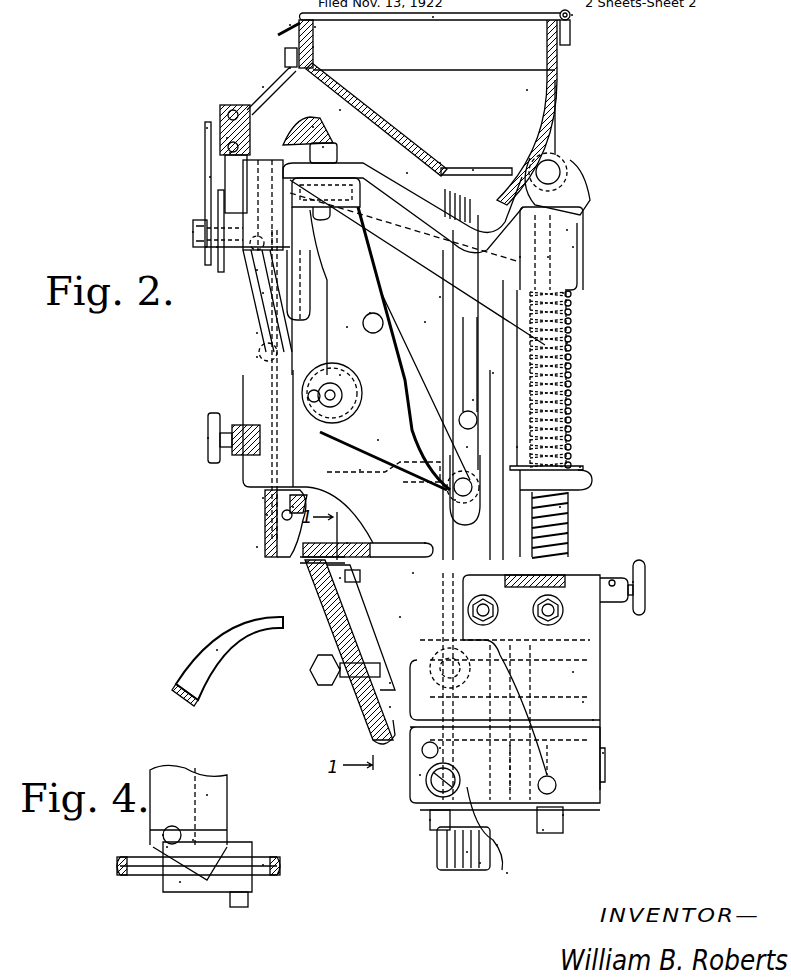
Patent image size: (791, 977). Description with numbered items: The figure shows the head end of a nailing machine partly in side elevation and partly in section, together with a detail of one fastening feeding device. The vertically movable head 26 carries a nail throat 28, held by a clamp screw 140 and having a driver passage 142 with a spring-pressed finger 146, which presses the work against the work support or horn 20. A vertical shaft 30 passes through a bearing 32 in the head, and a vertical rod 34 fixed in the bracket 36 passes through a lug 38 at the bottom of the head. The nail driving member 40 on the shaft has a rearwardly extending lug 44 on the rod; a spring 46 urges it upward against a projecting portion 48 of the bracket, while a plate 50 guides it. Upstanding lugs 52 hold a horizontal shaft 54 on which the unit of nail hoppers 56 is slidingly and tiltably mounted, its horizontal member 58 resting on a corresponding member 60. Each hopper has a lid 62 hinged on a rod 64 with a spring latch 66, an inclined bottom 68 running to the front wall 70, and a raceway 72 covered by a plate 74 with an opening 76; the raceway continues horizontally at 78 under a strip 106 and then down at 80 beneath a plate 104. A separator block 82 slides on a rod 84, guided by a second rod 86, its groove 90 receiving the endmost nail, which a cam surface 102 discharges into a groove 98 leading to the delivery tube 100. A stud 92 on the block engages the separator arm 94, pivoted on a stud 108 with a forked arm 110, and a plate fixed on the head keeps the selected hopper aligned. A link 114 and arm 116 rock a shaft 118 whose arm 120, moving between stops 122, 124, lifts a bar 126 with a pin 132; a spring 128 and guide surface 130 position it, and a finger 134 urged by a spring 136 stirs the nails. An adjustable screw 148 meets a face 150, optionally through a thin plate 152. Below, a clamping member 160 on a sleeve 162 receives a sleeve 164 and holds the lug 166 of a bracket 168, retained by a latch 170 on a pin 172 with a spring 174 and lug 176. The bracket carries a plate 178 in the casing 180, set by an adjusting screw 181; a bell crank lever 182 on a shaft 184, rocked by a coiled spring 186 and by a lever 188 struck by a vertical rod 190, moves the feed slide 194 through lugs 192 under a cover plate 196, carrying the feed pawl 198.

In FIG. 2, the work support or horn 20 is at (217, 650).
In FIG. 2, the head 26 is at (347, 327).
In FIG. 2, the nail throat or nozzle 28 is at (263, 498).
In FIG. 2, the vertical shaft 30 is at (467, 852).
In FIG. 2, the bearing 32 is at (560, 507).
In FIG. 2, the vertical rod 34 is at (573, 247).
In FIG. 2, the bracket 36 is at (567, 230).
In FIG. 2, the lug 38 is at (583, 702).
In FIG. 2, the nail driving member 40 is at (425, 322).
In FIG. 2, the rearwardly extending lug 44 is at (548, 257).
In FIG. 2, the spring 46 is at (567, 533).
In FIG. 2, the projecting portion 48 is at (520, 257).
In FIG. 2, the vertically disposed plate 50 is at (257, 270).
In FIG. 2, the upstanding lugs 52 is at (560, 193).
In FIG. 2, the horizontal shaft 54 is at (548, 172).
In FIG. 2, the nail hoppers 56 is at (527, 90).
In FIG. 2, the horizontal member 58 is at (340, 110).
In FIG. 2, the horizontal member 60 is at (323, 147).
In FIG. 2, the lid 62 is at (433, 17).
In FIG. 2, the horizontal rod 64 is at (572, 15).
In FIG. 2, the spring latch 66 is at (290, 25).
In FIG. 2, the inclined portion 68 is at (407, 173).
In FIG. 2, the front vertical wall 70 is at (313, 47).
In FIG. 2, the raceway 72 is at (440, 163).
In FIG. 2, the plate 74 is at (313, 127).
In FIG. 2, the opening 76 is at (473, 170).
In FIG. 2, the horizontal raceway portion 78 is at (290, 68).
In FIG. 2, the downwardly inclined raceway portion 80 is at (263, 87).
In FIG. 2, the separator block 82 is at (227, 138).
In FIG. 4, the separator block 82 is at (180, 882).
In FIG. 2, the horizontal rod 84 is at (230, 153).
In FIG. 4, the second rod 86 is at (263, 865).
In FIG. 4, the vertical groove 90 is at (193, 840).
In FIG. 2, the stud 92 is at (207, 128).
In FIG. 2, the separator arm 94 is at (210, 177).
In FIG. 4, the vertical groove 98 is at (163, 835).
In FIG. 2, the nail delivery tube 100 is at (263, 293).
In FIG. 4, the cam surface 102 is at (167, 847).
In FIG. 4, the plate 104 is at (207, 795).
In FIG. 2, the strip 106 is at (315, 27).
In FIG. 2, the horizontal stud 108 is at (193, 232).
In FIG. 2, the forked arm 110 is at (217, 247).
In FIG. 2, the link 114 is at (257, 333).
In FIG. 2, the arm 116 is at (257, 357).
In FIG. 2, the rock shaft 118 is at (340, 375).
In FIG. 2, the rearwardly extending arm 120 is at (378, 440).
In FIG. 2, the stop 122 is at (370, 313).
In FIG. 2, the stop 124 is at (425, 543).
In FIG. 2, the bar or finger 126 is at (467, 447).
In FIG. 2, the spring 128 is at (455, 500).
In FIG. 2, the guide surface 130 is at (563, 293).
In FIG. 2, the pin 132 is at (440, 297).
In FIG. 2, the finger 134 is at (493, 373).
In FIG. 2, the spring 136 is at (473, 400).
In FIG. 2, the clamp screw 140 is at (208, 438).
In FIG. 2, the driver passage 142 is at (267, 515).
In FIG. 2, the finger 146 is at (293, 507).
In FIG. 2, the adjustable screw 148 is at (567, 343).
In FIG. 2, the face 150 is at (580, 467).
In FIG. 2, the thin plate 152 is at (360, 470).
In FIG. 2, the clamping member 160 is at (420, 775).
In FIG. 2, the vertical sleeve 162 is at (430, 820).
In FIG. 2, the sleeve 164 is at (603, 753).
In FIG. 2, the lug 166 is at (497, 845).
In FIG. 2, the bracket 168 is at (593, 720).
In FIG. 2, the latch 170 is at (480, 863).
In FIG. 2, the pin 172 is at (543, 830).
In FIG. 2, the spring 174 is at (507, 873).
In FIG. 2, the lug 176 is at (440, 748).
In FIG. 2, the plate 178 is at (400, 617).
In FIG. 2, the casing 180 is at (413, 573).
In FIG. 2, the adjusting screw 181 is at (633, 582).
In FIG. 2, the bell crank lever 182 is at (390, 683).
In FIG. 2, the short horizontal shaft 184 is at (340, 668).
In FIG. 2, the coiled spring 186 is at (390, 707).
In FIG. 2, the lever 188 is at (573, 672).
In FIG. 2, the vertical rod 190 is at (517, 447).
In FIG. 2, the lugs 192 is at (340, 578).
In FIG. 2, the feed slide 194 is at (307, 562).
In FIG. 2, the cover plate 196 is at (347, 543).
In FIG. 2, the feed pawl 198 is at (257, 547).